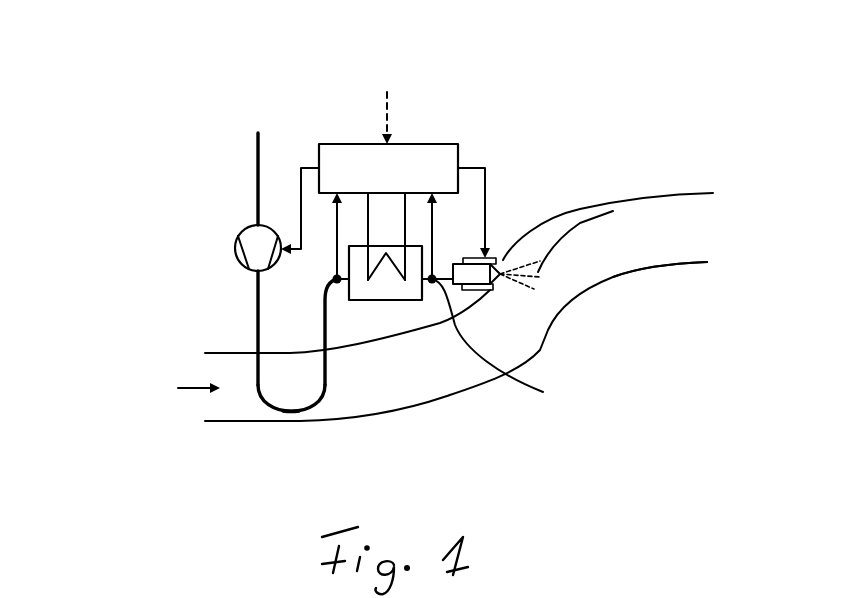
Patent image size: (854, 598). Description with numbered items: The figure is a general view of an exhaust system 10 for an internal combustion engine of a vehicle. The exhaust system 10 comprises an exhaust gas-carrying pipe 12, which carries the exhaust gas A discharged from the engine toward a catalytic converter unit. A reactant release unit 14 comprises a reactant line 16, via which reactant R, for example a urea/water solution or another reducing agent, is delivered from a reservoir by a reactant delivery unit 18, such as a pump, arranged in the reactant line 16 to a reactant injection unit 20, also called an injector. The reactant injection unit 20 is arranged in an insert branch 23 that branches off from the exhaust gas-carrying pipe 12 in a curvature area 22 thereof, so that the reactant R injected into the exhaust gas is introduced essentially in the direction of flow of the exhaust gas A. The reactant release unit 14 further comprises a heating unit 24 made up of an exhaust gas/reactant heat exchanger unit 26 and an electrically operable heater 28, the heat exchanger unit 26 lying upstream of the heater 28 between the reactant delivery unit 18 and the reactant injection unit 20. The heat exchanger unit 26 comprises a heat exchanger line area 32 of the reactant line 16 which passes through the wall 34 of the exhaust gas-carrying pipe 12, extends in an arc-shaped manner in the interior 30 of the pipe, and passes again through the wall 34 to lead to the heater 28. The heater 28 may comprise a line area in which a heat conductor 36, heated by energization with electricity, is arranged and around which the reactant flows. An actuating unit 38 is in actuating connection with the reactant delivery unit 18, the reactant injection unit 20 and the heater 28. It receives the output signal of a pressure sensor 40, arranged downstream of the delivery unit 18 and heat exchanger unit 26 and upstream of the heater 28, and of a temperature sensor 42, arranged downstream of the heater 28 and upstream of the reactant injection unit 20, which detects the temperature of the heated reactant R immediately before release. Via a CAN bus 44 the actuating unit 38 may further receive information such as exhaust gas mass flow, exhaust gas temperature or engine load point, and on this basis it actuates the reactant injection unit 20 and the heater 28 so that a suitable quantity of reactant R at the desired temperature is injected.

The exhaust system 10 is at (620, 96).
The exhaust gas-carrying pipe 12 is at (548, 338).
The reactant release unit 14 is at (495, 105).
The reactant line 16 is at (258, 158).
The reactant delivery unit 18 is at (233, 239).
The reactant injection unit 20 is at (456, 261).
The curvature area 22 is at (630, 312).
The insert branch 23 is at (497, 258).
The heating unit 24 is at (341, 400).
The exhaust gas/reactant heat exchanger unit 26 is at (240, 409).
The heater 28 is at (408, 302).
The interior 30 is at (222, 368).
The heat exchanger line area 32 is at (292, 412).
The wall 34 is at (670, 267).
The heat conductor 36 is at (378, 277).
The actuating unit 38 is at (411, 143).
The pressure sensor 40 is at (337, 279).
The temperature sensor 42 is at (512, 349).
The CAN bus 44 is at (387, 92).
The exhaust gas A is at (178, 388).
The reactant R is at (613, 211).